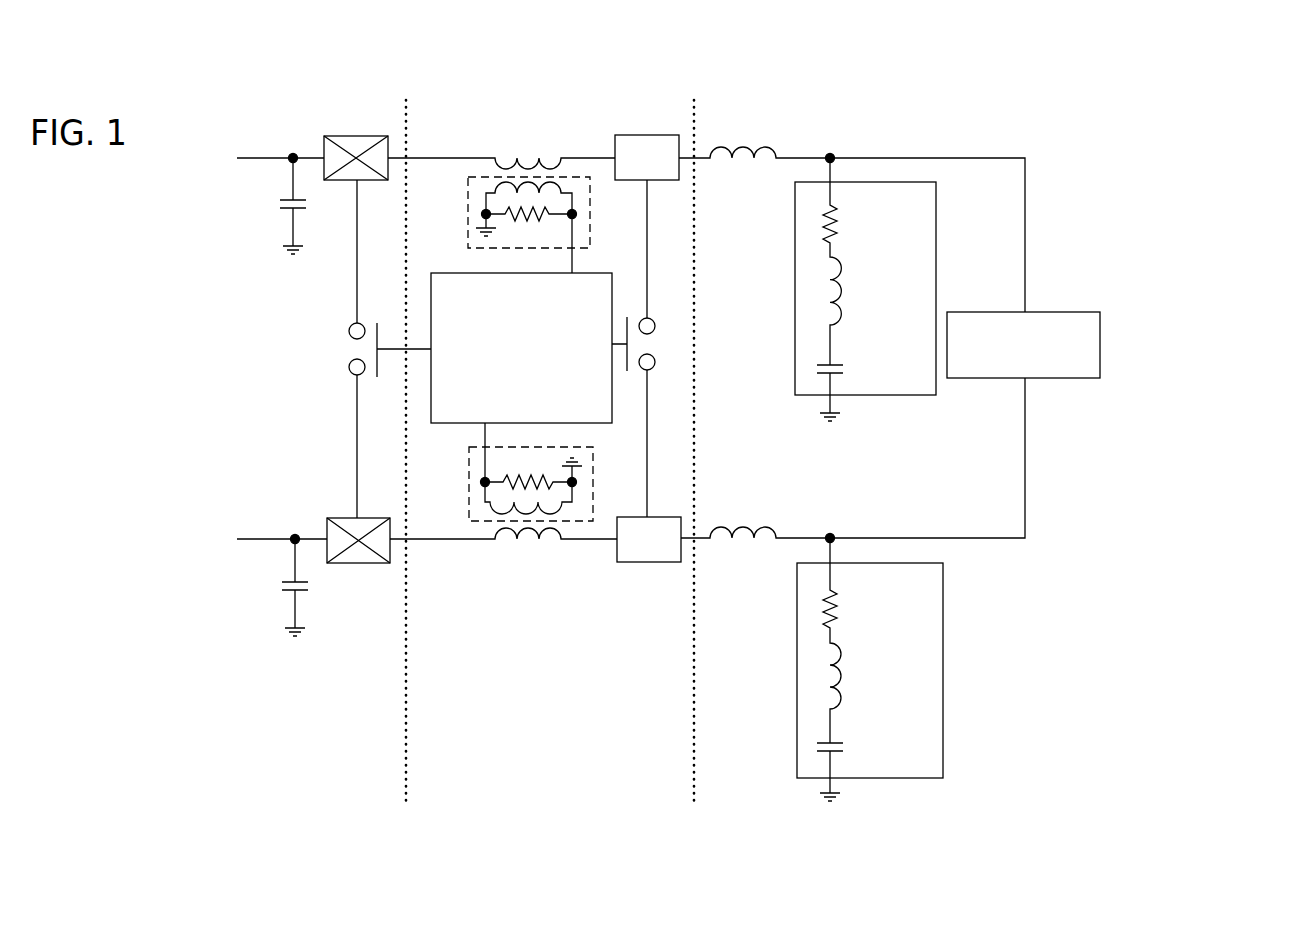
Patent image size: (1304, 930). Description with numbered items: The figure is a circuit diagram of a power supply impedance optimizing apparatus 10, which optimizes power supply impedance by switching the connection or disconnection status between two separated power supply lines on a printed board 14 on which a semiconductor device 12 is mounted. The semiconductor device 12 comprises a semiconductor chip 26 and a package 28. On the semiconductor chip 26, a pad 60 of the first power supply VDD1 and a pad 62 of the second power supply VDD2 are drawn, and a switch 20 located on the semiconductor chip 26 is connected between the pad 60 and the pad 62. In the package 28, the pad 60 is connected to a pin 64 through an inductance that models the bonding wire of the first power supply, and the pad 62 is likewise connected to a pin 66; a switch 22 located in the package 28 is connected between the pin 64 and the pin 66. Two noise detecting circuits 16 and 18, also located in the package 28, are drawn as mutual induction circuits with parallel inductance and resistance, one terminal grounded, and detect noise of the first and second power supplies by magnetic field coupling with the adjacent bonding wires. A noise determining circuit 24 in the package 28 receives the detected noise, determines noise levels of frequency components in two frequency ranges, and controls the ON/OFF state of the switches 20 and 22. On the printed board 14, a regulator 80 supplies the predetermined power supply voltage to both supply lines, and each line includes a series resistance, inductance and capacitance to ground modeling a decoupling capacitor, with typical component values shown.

The power supply impedance optimizing apparatus 10 is at (1058, 152).
The semiconductor device 12 is at (692, 95).
The printed board 14 is at (1100, 820).
The noise detecting circuit 16 is at (590, 200).
The noise detecting circuit 18 is at (594, 481).
The switch 20 is at (350, 329).
The switch 22 is at (653, 320).
The noise determining circuit 24 is at (600, 273).
The semiconductor chip 26 is at (403, 820).
The package 28 is at (693, 820).
The pad 60 is at (348, 174).
The pad 62 is at (348, 524).
The pin 64 is at (655, 173).
The pin 66 is at (660, 522).
The regulator 80 is at (1100, 346).